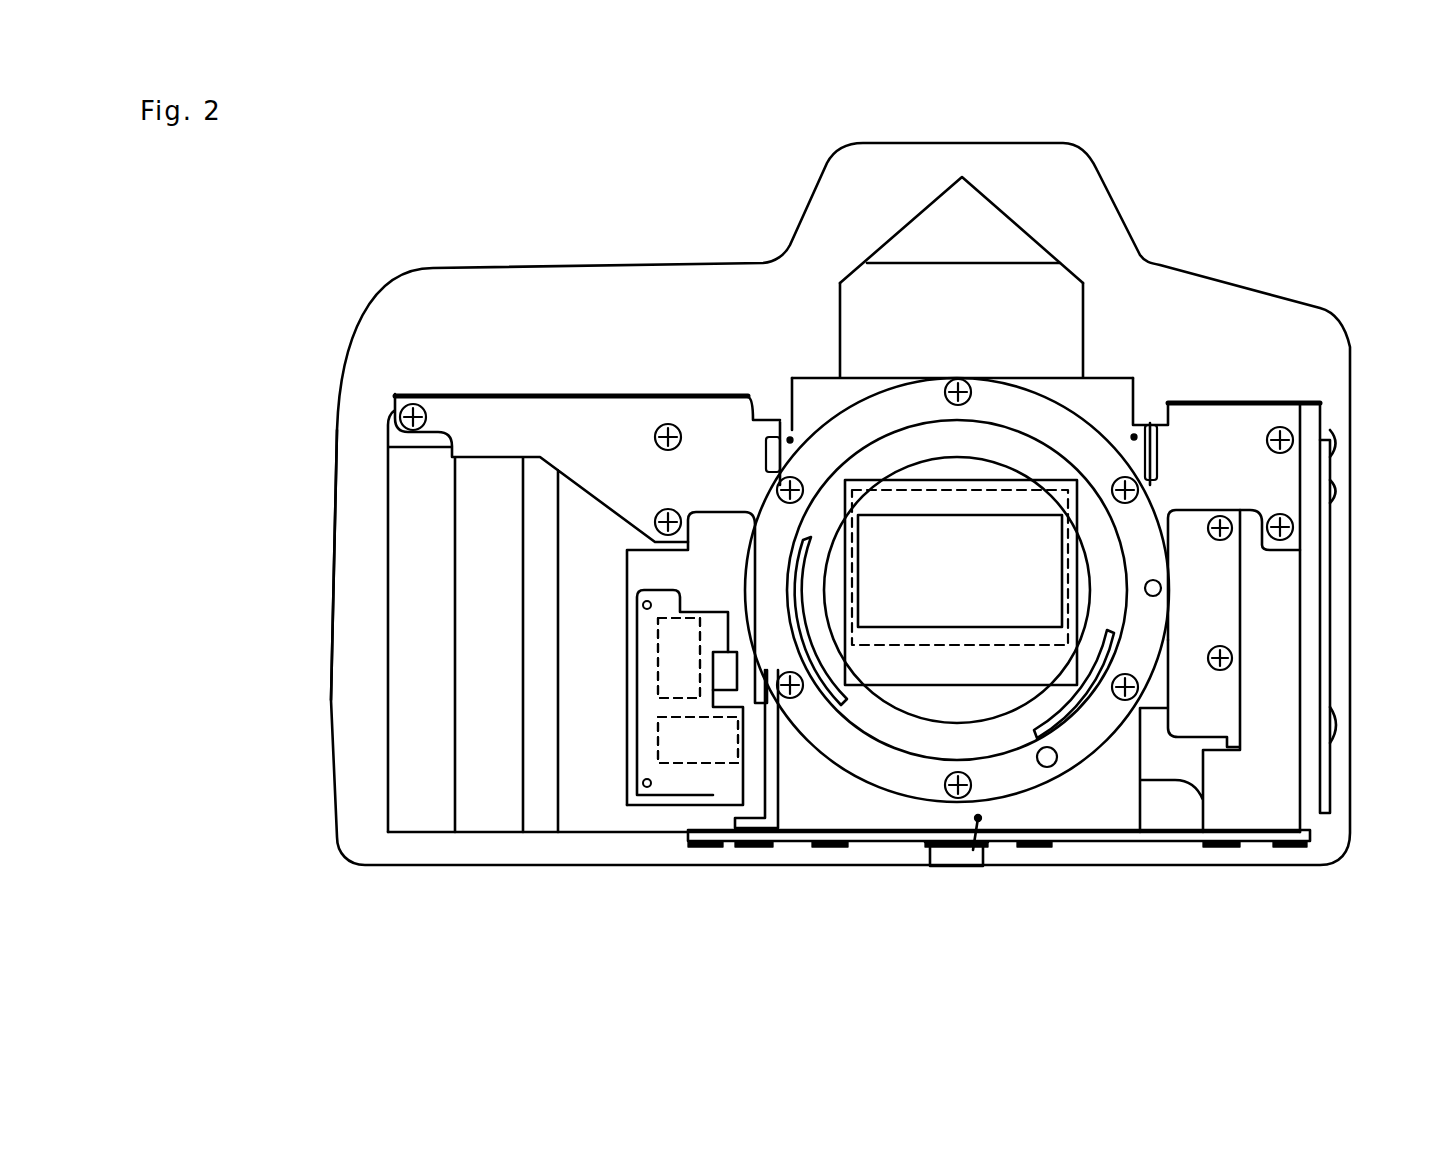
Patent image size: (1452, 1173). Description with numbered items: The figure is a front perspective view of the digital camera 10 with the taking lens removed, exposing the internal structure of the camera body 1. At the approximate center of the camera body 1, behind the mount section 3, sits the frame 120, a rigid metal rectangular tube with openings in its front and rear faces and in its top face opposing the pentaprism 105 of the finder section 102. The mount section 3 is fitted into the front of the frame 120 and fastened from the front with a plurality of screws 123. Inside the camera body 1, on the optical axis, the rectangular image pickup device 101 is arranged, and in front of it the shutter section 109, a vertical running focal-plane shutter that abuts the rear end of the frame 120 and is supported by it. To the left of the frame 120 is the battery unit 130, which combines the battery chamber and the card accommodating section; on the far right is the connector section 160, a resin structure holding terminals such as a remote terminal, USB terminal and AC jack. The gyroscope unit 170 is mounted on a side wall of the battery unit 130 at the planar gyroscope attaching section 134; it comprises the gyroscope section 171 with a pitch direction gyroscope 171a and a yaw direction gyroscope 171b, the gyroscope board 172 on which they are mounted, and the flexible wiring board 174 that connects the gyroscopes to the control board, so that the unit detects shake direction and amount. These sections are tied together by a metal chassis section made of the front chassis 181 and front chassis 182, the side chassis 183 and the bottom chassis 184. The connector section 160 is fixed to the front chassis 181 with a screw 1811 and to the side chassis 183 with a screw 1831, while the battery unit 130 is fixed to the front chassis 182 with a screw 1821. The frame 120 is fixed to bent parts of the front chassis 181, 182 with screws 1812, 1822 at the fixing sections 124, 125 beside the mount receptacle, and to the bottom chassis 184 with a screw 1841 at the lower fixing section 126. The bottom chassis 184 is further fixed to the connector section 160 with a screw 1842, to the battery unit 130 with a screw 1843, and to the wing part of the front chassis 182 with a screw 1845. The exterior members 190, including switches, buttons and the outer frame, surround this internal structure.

The camera body 1 is at (1063, 181).
The digital camera 10 is at (1268, 247).
The mount section 3 is at (1008, 782).
The image pickup device 101 is at (1030, 488).
The finder section 102 is at (1073, 290).
The pentaprism 105 is at (930, 237).
The shutter section 109 is at (1012, 609).
The frame 120 is at (877, 810).
The screws 123 is at (1143, 695).
The fixing section 124 is at (791, 428).
The fixing section 125 is at (1140, 425).
The fixing section 126 is at (973, 850).
The battery unit 130 is at (482, 700).
The gyroscope attaching section 134 is at (646, 575).
The connector section 160 is at (1268, 625).
The gyroscope unit 170 is at (640, 805).
The gyroscope section 171 is at (428, 887).
The pitch direction gyroscope 171a is at (660, 743).
The yaw direction gyroscope 171b is at (658, 648).
The gyroscope board 172 is at (677, 784).
The flexible wiring board for gyroscopes 174 is at (725, 660).
The front chassis 181 is at (1222, 427).
The screw 1811 is at (1293, 525).
The screw 1812 is at (1165, 455).
The front chassis 182 is at (547, 420).
The screw 1821 is at (413, 403).
The screw 1822 is at (764, 450).
The side chassis 183 is at (1331, 580).
The screw 1831 is at (1344, 490).
The bottom chassis 184 is at (1115, 843).
The screw 1841 is at (822, 850).
The screw 1842 is at (1293, 850).
The screw 1843 is at (708, 848).
The screw 1845 is at (752, 850).
The exterior members 190 is at (331, 515).